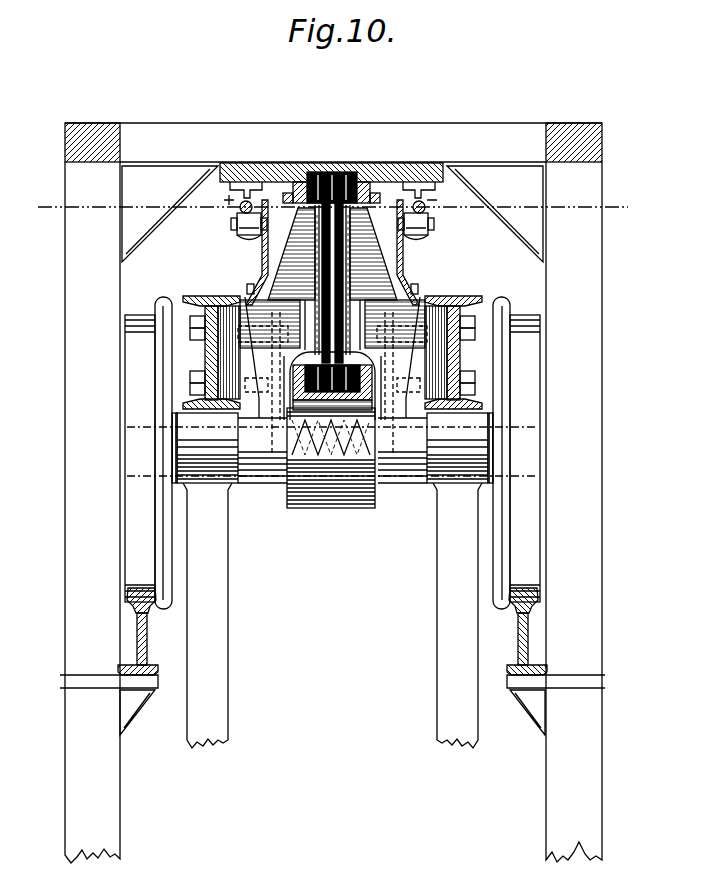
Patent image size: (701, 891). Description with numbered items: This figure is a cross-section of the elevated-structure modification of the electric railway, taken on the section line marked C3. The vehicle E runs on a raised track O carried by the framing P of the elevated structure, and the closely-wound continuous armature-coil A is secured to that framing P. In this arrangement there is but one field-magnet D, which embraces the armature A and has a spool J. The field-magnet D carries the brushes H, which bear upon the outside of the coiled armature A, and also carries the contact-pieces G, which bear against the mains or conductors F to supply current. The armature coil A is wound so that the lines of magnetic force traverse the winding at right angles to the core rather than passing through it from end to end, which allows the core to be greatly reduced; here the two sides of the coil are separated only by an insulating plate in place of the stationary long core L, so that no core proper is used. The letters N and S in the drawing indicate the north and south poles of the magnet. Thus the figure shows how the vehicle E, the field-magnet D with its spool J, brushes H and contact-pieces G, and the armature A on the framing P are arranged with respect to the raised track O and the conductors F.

The framing P is at (332, 493).
The armature A is at (347, 172).
The section line C3 is at (333, 206).
The brushes H is at (332, 283).
The stationary long core L is at (299, 207).
The mains or conductors F is at (238, 209).
The contact-pieces G is at (332, 236).
The north pole N is at (272, 332).
The south pole S is at (394, 332).
The field-magnet D is at (332, 375).
The spool J is at (331, 467).
The vehicle E is at (332, 453).
The raised track O is at (332, 631).